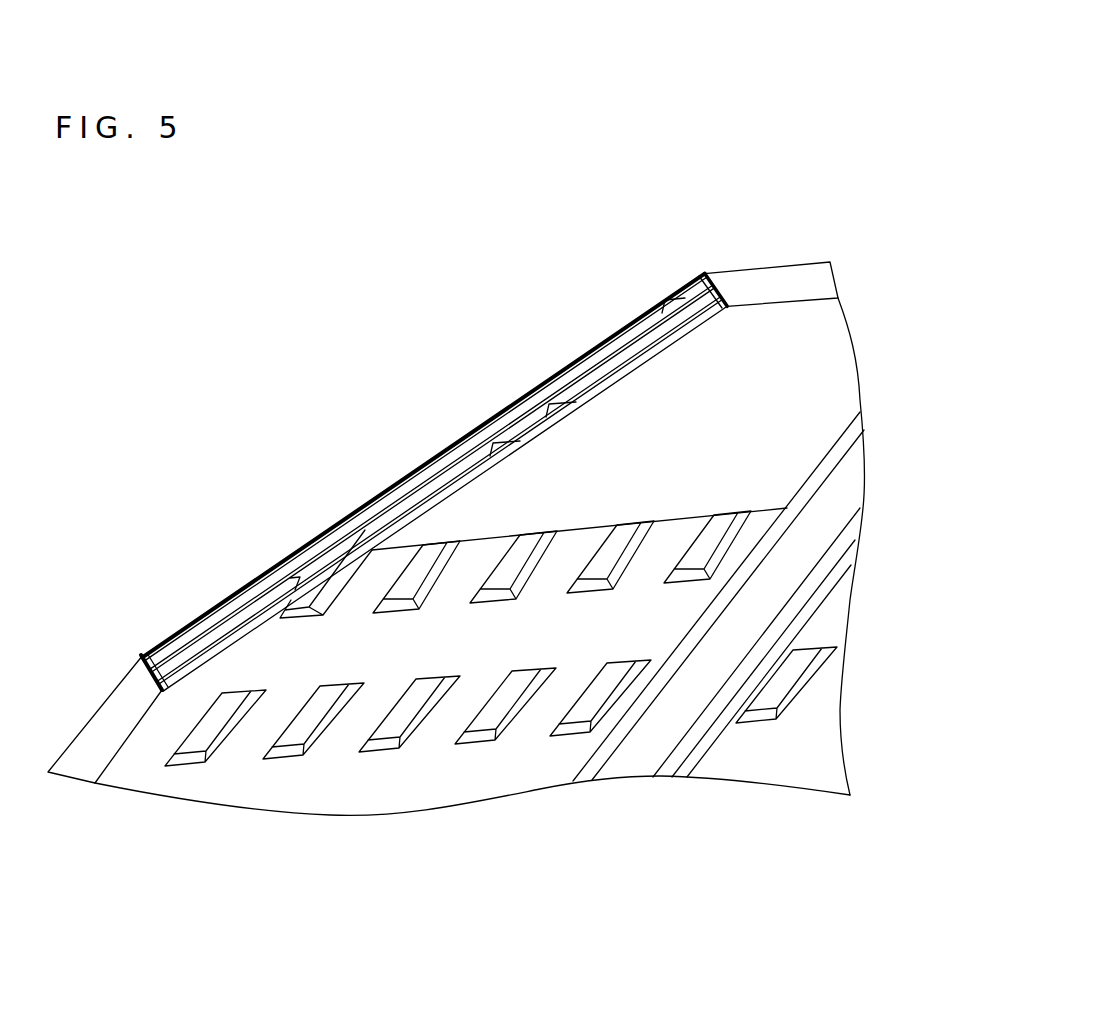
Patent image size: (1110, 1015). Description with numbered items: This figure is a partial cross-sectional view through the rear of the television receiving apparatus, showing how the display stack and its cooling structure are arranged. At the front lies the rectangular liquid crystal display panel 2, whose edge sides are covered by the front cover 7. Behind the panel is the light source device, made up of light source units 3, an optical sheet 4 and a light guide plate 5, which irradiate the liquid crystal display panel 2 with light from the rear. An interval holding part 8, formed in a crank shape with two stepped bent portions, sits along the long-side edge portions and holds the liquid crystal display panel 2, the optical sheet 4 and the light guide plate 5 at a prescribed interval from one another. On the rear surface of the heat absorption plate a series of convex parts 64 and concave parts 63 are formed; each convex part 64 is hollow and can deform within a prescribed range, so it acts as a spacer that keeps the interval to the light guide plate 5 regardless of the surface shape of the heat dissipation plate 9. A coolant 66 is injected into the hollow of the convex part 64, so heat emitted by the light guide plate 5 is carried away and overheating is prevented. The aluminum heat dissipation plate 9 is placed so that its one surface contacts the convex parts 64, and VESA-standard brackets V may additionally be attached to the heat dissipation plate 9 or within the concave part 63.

The liquid crystal display panel 2 is at (434, 464).
The light source unit 3 is at (706, 284).
The optical sheet 4 is at (608, 343).
The light guide plate 5 is at (671, 312).
The front cover 7 is at (107, 712).
The interval holding part 8 is at (145, 650).
The heat dissipation plate 9 is at (837, 322).
The concave part 63 is at (323, 570).
The convex part 64 is at (235, 638).
The coolant 66 is at (437, 490).
The bracket V is at (630, 764).